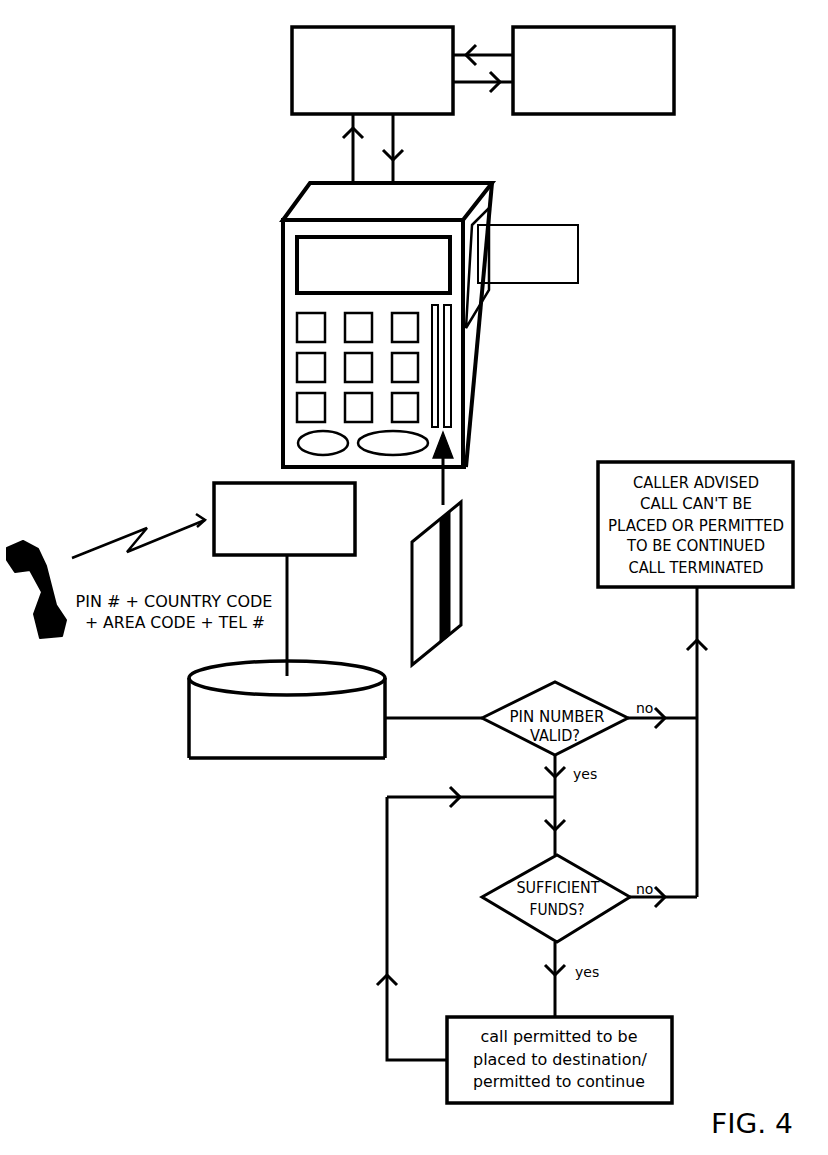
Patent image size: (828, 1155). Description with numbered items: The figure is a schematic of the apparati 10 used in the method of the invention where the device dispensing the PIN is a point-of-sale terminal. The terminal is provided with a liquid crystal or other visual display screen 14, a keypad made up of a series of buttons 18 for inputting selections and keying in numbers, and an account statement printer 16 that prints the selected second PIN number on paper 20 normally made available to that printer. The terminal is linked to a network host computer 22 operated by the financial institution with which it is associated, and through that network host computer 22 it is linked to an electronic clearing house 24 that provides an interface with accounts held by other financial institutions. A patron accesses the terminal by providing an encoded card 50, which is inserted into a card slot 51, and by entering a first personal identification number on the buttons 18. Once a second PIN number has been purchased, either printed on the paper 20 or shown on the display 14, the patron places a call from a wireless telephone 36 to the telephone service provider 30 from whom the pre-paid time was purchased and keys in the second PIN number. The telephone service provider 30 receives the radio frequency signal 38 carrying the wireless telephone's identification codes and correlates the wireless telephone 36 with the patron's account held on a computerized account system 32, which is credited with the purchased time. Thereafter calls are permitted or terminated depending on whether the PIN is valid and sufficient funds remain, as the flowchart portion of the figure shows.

The apparati 10 is at (396, 247).
The visual display screen 14 is at (327, 277).
The account statement printer 16 is at (484, 221).
The buttons 18 is at (313, 372).
The paper 20 is at (528, 254).
The network host computer 22 is at (372, 70).
The electronic clearing house 24 is at (593, 70).
The telephone service provider 30 is at (284, 519).
The computerized account system 32 is at (287, 709).
The wireless telephone 36 is at (42, 542).
The radio frequency signal 38 is at (168, 530).
The encoded card 50 is at (471, 566).
The card slot 51 is at (448, 352).